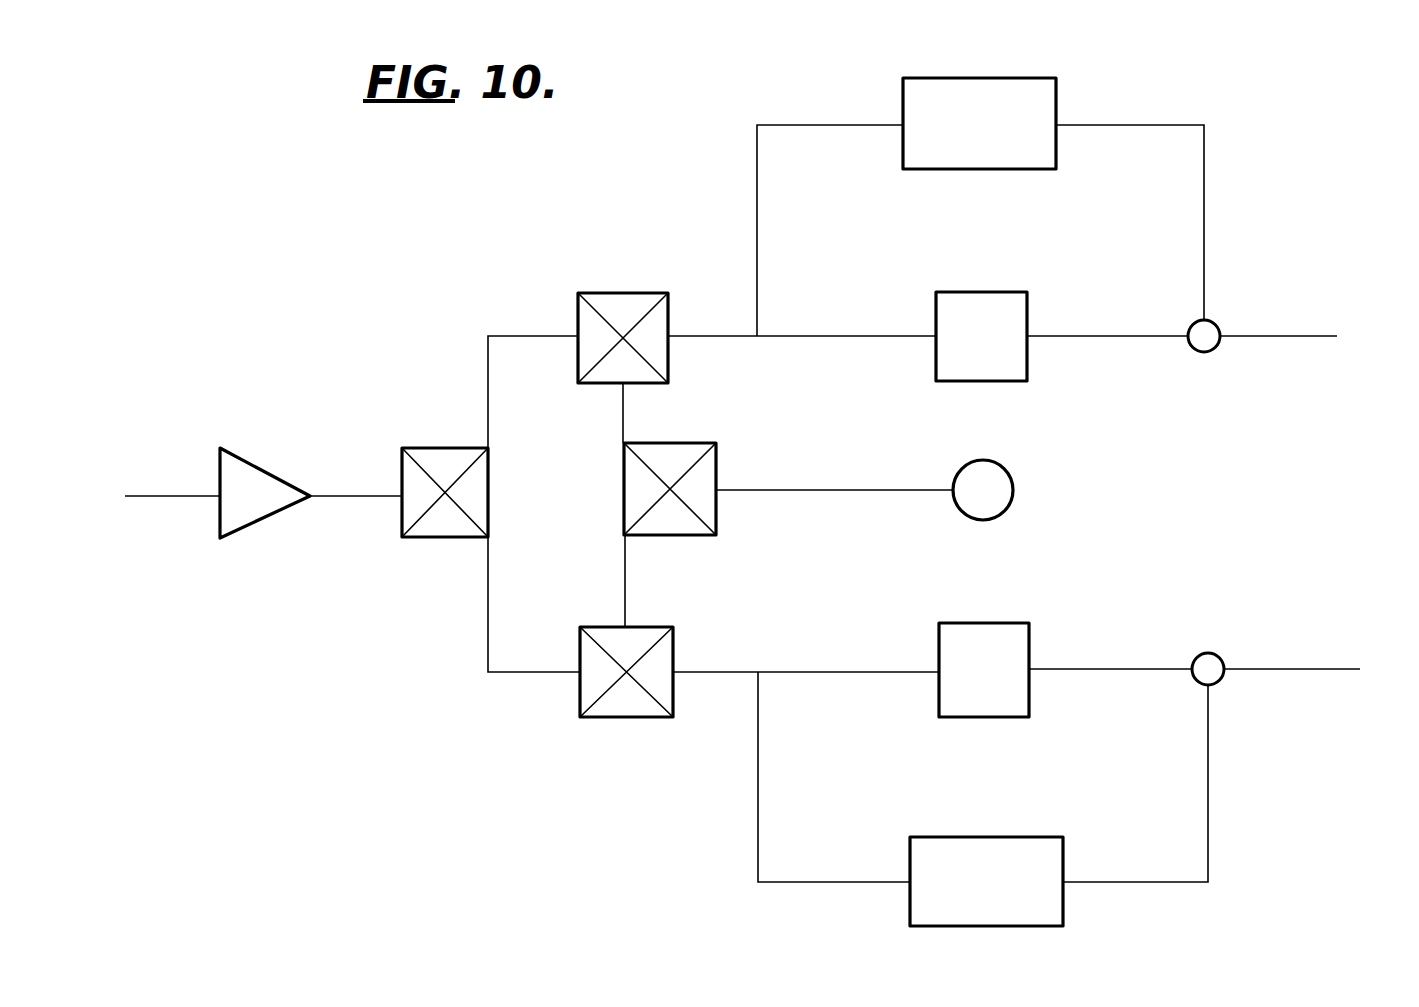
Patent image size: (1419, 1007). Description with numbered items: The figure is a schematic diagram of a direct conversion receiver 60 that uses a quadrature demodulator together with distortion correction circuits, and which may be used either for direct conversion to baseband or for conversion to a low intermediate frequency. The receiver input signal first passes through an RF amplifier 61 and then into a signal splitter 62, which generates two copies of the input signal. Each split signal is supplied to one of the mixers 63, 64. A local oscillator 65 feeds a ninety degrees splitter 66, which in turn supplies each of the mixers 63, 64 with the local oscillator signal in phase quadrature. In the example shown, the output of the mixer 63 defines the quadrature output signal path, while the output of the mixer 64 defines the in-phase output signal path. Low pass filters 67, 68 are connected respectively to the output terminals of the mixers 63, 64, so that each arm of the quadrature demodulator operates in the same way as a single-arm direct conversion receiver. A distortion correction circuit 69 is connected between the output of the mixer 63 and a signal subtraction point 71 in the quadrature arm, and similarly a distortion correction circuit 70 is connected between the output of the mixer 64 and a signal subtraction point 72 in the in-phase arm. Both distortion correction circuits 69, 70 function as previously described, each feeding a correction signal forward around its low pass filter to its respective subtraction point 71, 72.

The direct conversion receiver 60 is at (508, 284).
The RF amplifier 61 is at (250, 470).
The signal splitter 62 is at (422, 442).
The mixer 63 is at (635, 293).
The mixer 64 is at (620, 700).
The local oscillator 65 is at (1013, 488).
The 90 degrees splitter 66 is at (716, 522).
The low pass filter 67 is at (1027, 375).
The low pass filter 68 is at (1029, 623).
The distortion correction circuit 69 is at (1047, 170).
The distortion correction circuit 70 is at (1057, 835).
The signal subtraction point 71 is at (1220, 323).
The signal subtraction point 72 is at (1220, 680).